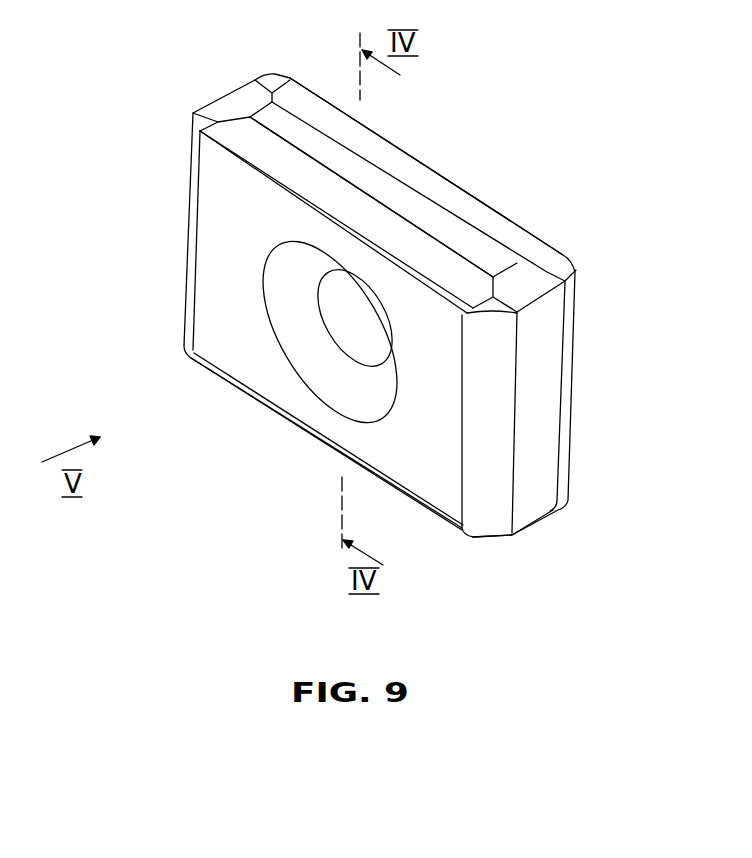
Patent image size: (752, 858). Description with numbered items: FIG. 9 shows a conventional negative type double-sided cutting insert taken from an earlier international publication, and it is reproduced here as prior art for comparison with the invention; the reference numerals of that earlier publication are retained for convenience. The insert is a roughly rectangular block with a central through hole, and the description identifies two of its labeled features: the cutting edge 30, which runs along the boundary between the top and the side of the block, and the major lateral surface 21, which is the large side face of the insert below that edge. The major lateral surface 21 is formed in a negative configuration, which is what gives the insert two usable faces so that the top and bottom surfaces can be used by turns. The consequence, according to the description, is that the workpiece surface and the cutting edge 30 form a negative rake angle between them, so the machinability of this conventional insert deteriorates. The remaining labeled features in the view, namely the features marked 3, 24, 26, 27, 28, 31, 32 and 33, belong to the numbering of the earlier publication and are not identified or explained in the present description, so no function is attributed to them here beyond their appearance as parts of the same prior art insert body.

The cutting edge 3 is at (392, 137).
The major lateral surface 21 is at (223, 348).
The top surface of raised portion 24 is at (453, 233).
The side surface 26 is at (540, 468).
The rounded edge 27 is at (184, 304).
The hole 28 is at (348, 332).
The cutting edge 30 is at (250, 168).
The rim 31 is at (226, 84).
The corner facet 32 is at (273, 73).
The inclined surface 33 is at (433, 190).